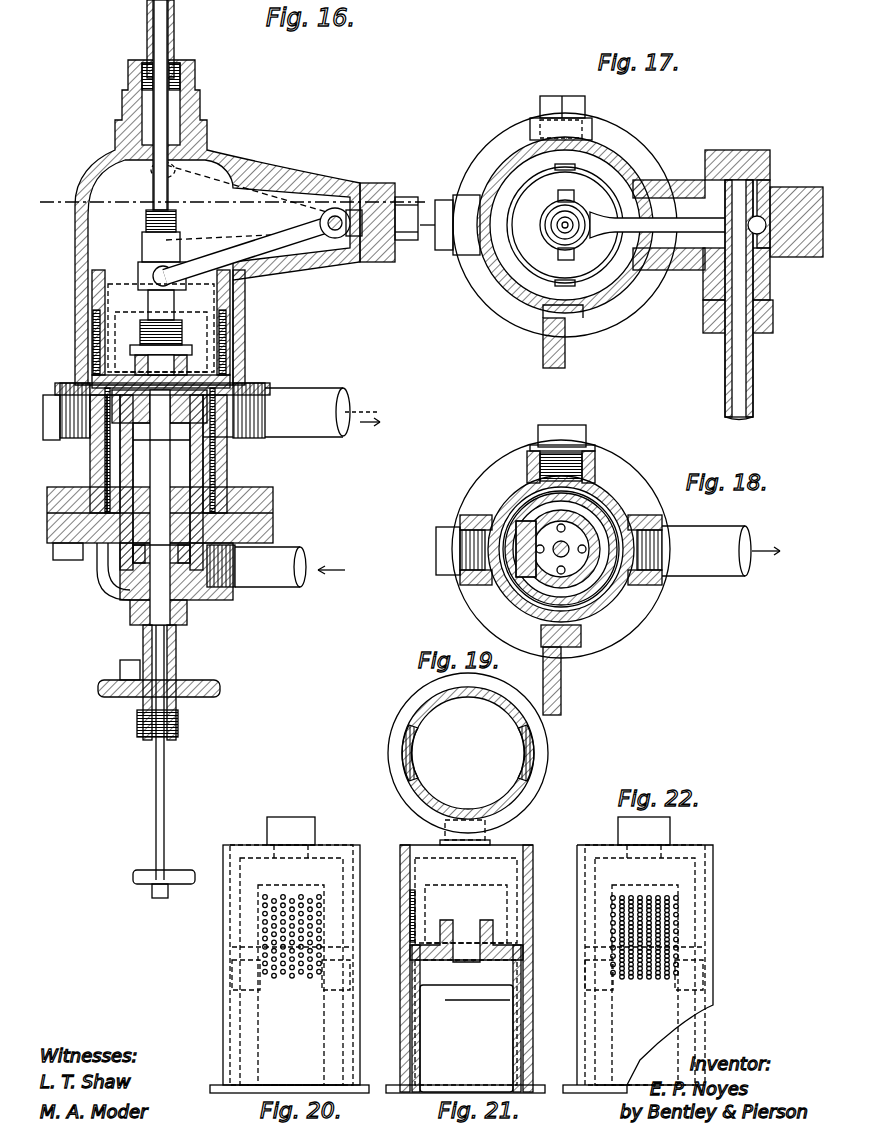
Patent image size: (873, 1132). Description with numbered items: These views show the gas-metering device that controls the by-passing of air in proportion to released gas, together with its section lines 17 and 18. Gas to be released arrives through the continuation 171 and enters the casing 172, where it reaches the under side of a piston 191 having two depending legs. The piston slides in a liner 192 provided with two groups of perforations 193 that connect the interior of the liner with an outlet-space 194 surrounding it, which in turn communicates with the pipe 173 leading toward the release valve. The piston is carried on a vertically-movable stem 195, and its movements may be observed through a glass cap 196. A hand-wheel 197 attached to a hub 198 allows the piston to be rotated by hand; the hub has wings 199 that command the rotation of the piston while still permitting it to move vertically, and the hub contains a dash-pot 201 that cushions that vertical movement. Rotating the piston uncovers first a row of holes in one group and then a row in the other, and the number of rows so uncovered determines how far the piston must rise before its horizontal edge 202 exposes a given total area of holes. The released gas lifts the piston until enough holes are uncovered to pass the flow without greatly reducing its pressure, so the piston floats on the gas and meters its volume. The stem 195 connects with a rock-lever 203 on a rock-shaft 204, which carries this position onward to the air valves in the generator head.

In FIG. 16, the section line 17 is at (232, 199).
In FIG. 17, the section line 17 is at (428, 226).
In FIG. 16, the inlet pipe connection 18 is at (51, 411).
In FIG. 16, the continuation 171 is at (280, 555).
In FIG. 16, the casing 172 is at (245, 330).
In FIG. 17, the casing 172 is at (625, 180).
In FIG. 16, the pipe 173 is at (320, 395).
In FIG. 18, the pipe 173 is at (721, 551).
In FIG. 16, the piston 191 is at (232, 375).
In FIG. 18, the piston 191 is at (505, 530).
In FIG. 19, the piston 191 is at (420, 750).
In FIG. 21, the piston 191 is at (503, 940).
In FIG. 16, the liner 192 is at (92, 283).
In FIG. 17, the liner 192 is at (508, 175).
In FIG. 20, the liner 192 is at (345, 845).
In FIG. 21, the liner 192 is at (533, 852).
In FIG. 22, the liner 192 is at (710, 850).
In FIG. 16, the perforations 193 is at (93, 328).
In FIG. 19, the perforations 193 is at (408, 750).
In FIG. 20, the perforations 193 is at (320, 897).
In FIG. 21, the perforations 193 is at (415, 915).
In FIG. 22, the perforations 193 is at (636, 897).
In FIG. 16, the outlet-space 194 is at (230, 462).
In FIG. 16, the stem 195 is at (148, 235).
In FIG. 16, the glass cap 196 is at (176, 30).
In FIG. 16, the hand-wheel 197 is at (200, 678).
In FIG. 16, the hub 198 is at (97, 575).
In FIG. 16, the wings 199 is at (95, 460).
In FIG. 18, the wings 199 is at (525, 520).
In FIG. 16, the dash-pot 201 is at (180, 500).
In FIG. 21, the horizontal edge 202 is at (465, 975).
In FIG. 16, the rock-lever 203 is at (290, 250).
In FIG. 17, the rock-lever 203 is at (690, 225).
In FIG. 16, the rock-shaft 204 is at (338, 218).
In FIG. 17, the rock-shaft 204 is at (752, 360).